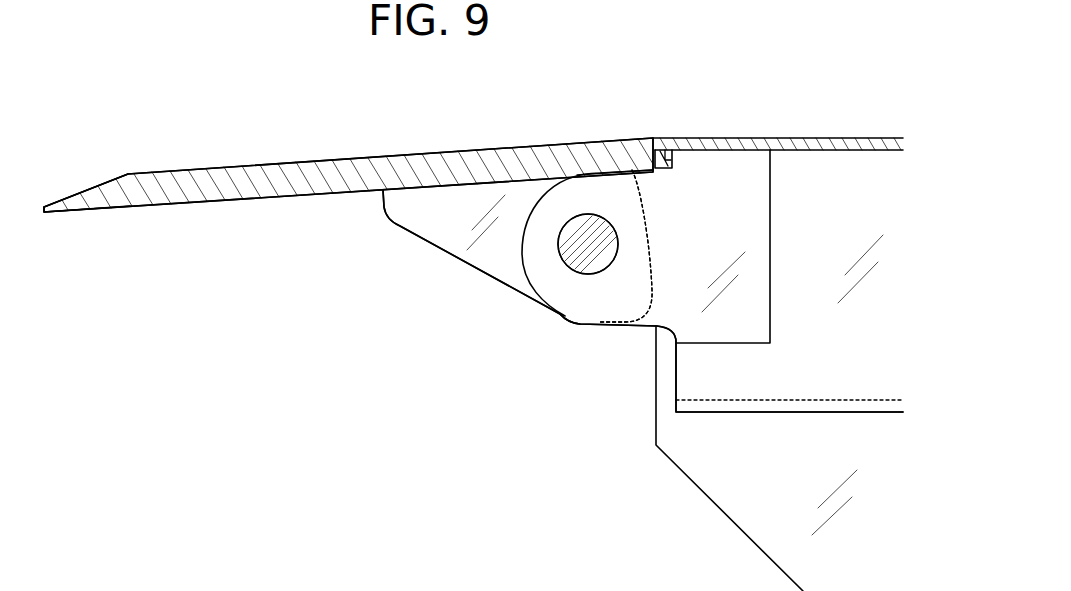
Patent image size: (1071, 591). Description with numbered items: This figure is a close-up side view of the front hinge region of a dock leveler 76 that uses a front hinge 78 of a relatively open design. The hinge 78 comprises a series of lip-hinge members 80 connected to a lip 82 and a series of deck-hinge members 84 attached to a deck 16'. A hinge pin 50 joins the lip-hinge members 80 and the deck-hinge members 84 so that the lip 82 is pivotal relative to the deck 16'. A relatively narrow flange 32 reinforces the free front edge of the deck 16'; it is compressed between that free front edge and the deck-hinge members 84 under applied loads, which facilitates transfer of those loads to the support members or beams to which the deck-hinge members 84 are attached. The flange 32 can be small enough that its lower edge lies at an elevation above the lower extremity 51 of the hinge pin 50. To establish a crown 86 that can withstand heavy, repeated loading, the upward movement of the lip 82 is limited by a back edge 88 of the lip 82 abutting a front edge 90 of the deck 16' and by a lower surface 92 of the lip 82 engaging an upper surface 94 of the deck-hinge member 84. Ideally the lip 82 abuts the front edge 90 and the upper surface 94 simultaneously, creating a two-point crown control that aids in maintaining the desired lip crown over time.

The dock leveler 76 is at (232, 128).
The lip 82 is at (290, 163).
The lower surface 92 is at (204, 203).
The lip-hinge member 80 is at (428, 247).
The deck-hinge member 84 is at (516, 268).
The hinge pin 50 is at (577, 214).
The lower extremity 51 is at (587, 274).
The front hinge 78 is at (540, 333).
The back edge 88 is at (665, 162).
The upper surface 94 is at (642, 168).
The front edge 90 is at (643, 140).
The crown 86 is at (773, 89).
The flange 32 is at (672, 155).
The deck 16' is at (732, 458).